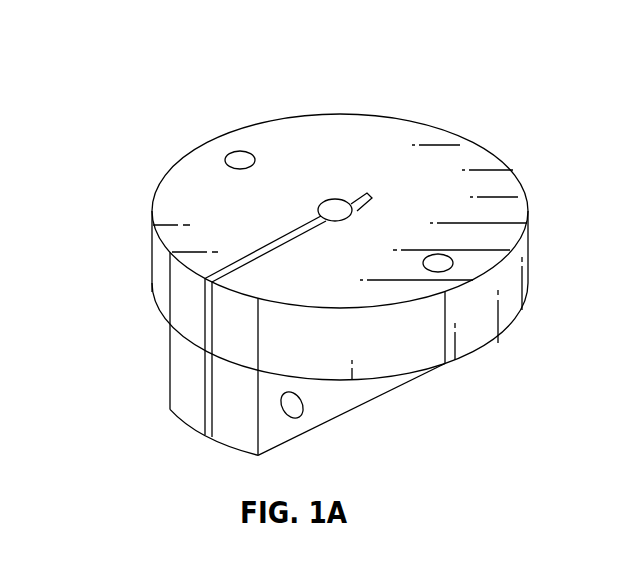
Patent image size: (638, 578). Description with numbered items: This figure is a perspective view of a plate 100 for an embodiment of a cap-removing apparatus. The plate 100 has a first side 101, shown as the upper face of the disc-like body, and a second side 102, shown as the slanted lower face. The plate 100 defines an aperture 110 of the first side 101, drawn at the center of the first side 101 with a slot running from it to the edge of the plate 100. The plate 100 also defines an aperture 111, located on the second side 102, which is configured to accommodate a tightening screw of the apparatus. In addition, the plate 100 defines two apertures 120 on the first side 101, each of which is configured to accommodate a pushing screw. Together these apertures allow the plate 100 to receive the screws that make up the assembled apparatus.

The plate 100 is at (294, 235).
The first side 101 is at (462, 158).
The second side 102 is at (435, 395).
The aperture 110 is at (338, 204).
The aperture 111 is at (297, 413).
The apertures 120 is at (228, 157).